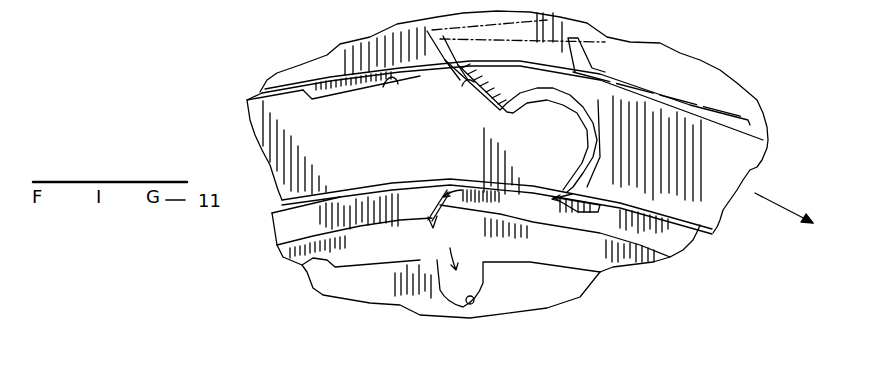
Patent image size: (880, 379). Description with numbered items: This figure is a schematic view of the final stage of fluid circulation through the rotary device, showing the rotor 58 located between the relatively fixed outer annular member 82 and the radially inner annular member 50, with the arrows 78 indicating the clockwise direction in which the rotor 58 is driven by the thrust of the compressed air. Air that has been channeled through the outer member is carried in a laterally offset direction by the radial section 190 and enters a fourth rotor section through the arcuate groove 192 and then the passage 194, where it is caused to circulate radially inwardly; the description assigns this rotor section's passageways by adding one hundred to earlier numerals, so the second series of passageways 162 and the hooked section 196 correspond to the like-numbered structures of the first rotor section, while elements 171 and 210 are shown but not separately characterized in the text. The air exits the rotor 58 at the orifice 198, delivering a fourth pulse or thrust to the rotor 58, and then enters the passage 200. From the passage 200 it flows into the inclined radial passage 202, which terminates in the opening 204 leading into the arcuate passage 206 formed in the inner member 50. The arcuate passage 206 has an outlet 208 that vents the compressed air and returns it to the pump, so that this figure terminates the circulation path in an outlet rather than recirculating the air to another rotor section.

The inner annular member 50 is at (560, 293).
The rotor 58 is at (278, 160).
The arrows 78 is at (780, 203).
The outer annular member 82 is at (745, 95).
The wall 162 is at (597, 138).
The seal strip 171 is at (468, 67).
The radial section 190 is at (430, 48).
The arcuate groove 192 is at (383, 87).
The passage 194 is at (474, 84).
The cavity 196 is at (558, 100).
The orifice 198 is at (578, 190).
The passage 200 is at (548, 208).
The inclined radial passage 202 is at (433, 206).
The opening 204 is at (433, 222).
The arcuate passage 206 is at (303, 267).
The outlet 208 is at (473, 305).
The slot 210 is at (478, 266).